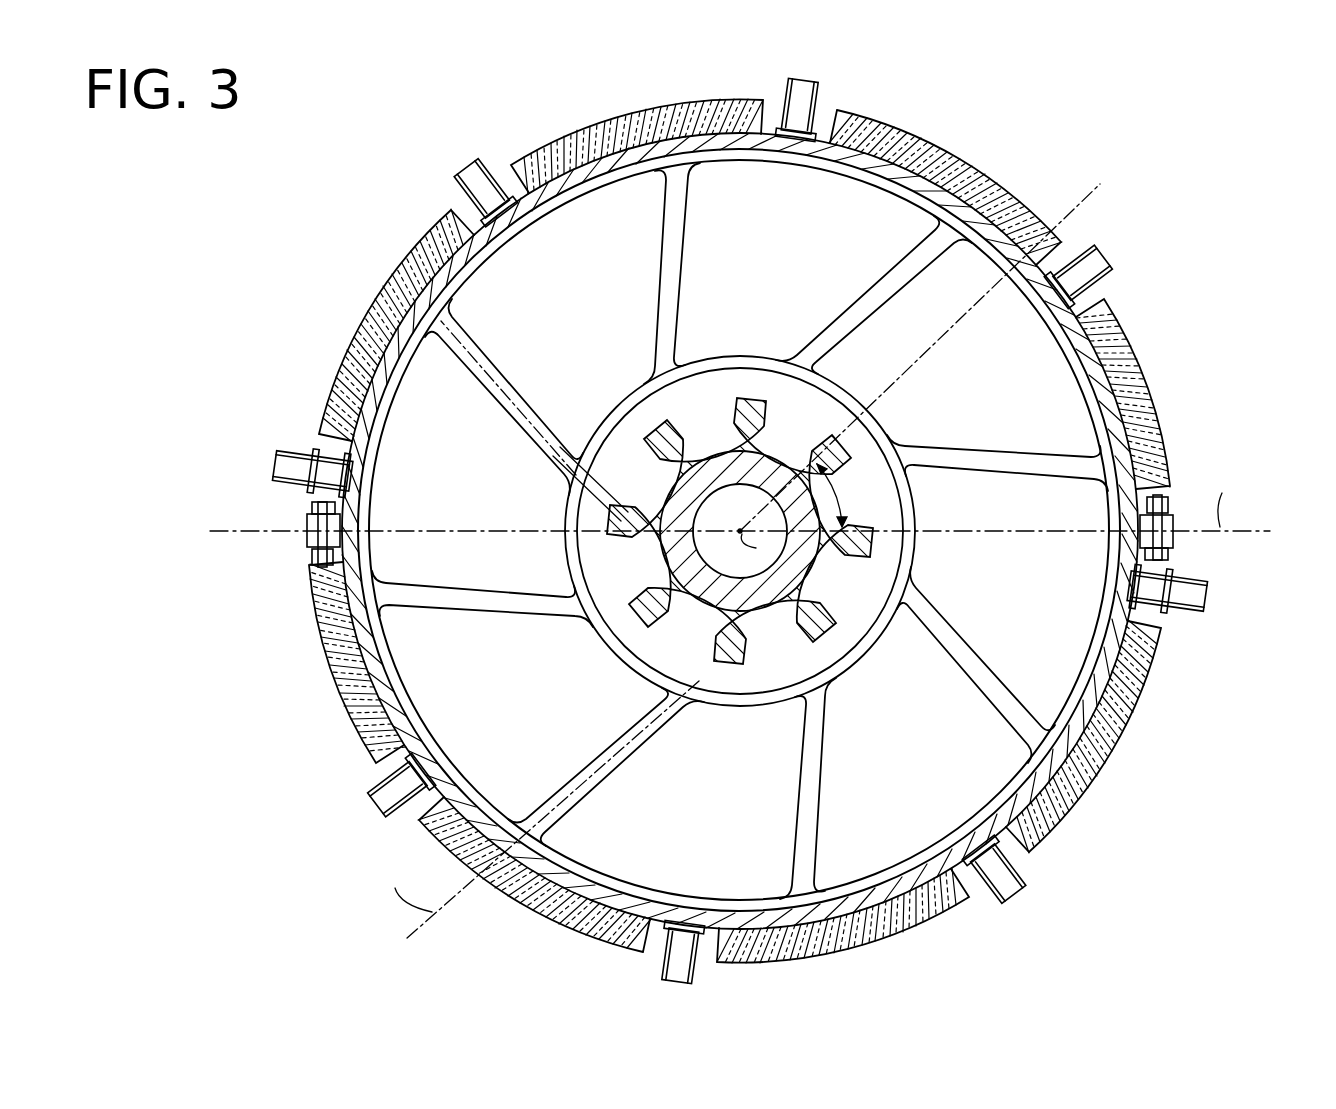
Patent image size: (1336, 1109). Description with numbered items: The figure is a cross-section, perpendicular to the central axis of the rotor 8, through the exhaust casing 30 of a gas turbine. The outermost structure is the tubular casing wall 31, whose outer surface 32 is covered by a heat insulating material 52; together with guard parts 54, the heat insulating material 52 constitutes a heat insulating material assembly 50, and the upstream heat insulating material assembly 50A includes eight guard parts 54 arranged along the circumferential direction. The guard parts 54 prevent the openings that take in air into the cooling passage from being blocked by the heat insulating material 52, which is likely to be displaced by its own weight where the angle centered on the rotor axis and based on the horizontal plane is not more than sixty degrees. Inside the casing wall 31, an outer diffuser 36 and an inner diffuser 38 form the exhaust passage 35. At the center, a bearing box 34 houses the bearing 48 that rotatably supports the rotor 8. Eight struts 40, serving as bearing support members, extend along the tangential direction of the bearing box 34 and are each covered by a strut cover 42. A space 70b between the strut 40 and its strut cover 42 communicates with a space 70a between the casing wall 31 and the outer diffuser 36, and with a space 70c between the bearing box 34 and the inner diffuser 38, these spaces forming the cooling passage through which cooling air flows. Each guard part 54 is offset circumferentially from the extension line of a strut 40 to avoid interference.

The rotor 8 is at (730, 643).
The exhaust casing 30 is at (1228, 160).
The casing wall 31 is at (932, 168).
The outer surface 32 is at (587, 144).
The bearing box 34 is at (706, 410).
The exhaust passage 35 is at (812, 276).
The outer diffuser 36 is at (910, 860).
The inner diffuser 38 is at (868, 656).
The strut 40 is at (493, 387).
The strut cover 42 is at (686, 258).
The bearing 48 is at (640, 575).
The heat insulating material assembly 50 is at (969, 337).
The upstream heat insulating material assembly 50A is at (1060, 196).
The heat insulating material 52 is at (385, 308).
The guard part 54 is at (832, 98).
The space 70a is at (567, 202).
The space 70b is at (475, 347).
The space 70c is at (613, 417).